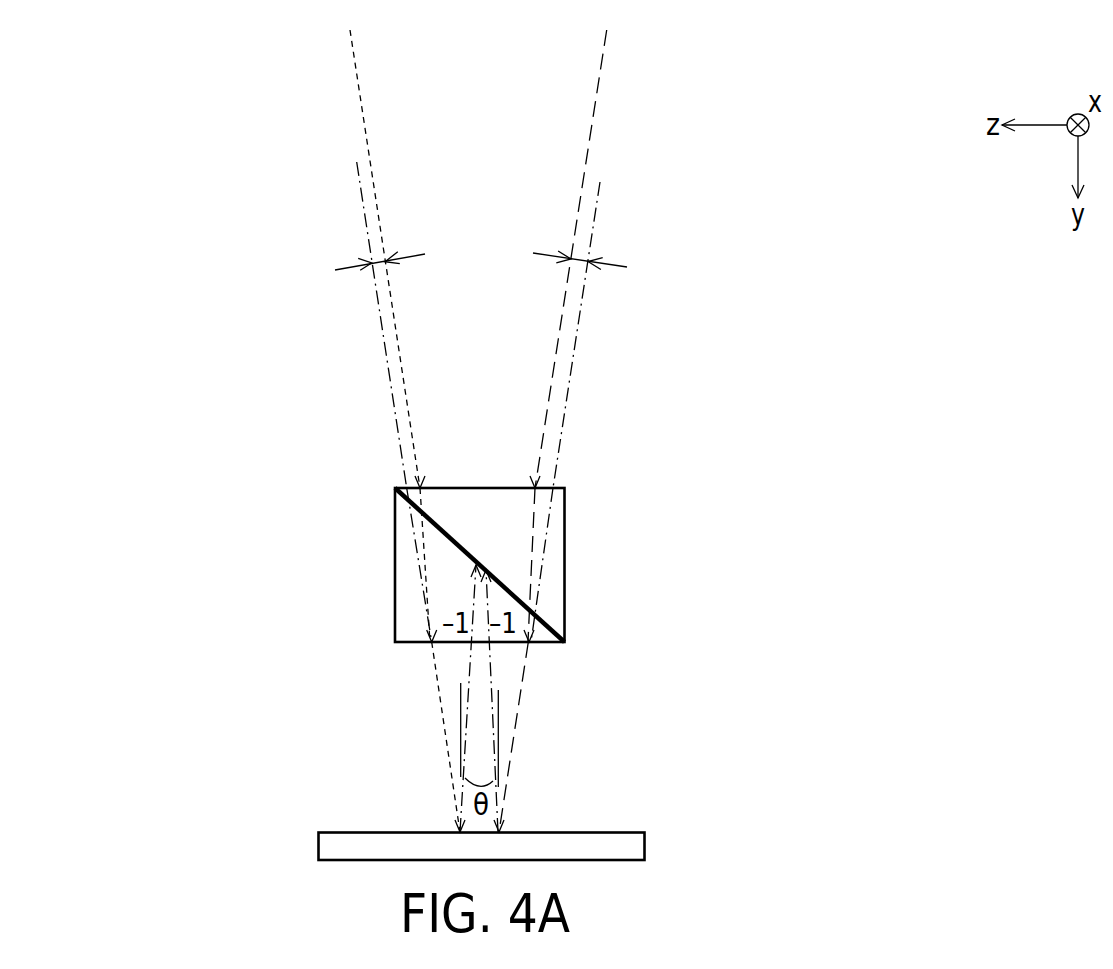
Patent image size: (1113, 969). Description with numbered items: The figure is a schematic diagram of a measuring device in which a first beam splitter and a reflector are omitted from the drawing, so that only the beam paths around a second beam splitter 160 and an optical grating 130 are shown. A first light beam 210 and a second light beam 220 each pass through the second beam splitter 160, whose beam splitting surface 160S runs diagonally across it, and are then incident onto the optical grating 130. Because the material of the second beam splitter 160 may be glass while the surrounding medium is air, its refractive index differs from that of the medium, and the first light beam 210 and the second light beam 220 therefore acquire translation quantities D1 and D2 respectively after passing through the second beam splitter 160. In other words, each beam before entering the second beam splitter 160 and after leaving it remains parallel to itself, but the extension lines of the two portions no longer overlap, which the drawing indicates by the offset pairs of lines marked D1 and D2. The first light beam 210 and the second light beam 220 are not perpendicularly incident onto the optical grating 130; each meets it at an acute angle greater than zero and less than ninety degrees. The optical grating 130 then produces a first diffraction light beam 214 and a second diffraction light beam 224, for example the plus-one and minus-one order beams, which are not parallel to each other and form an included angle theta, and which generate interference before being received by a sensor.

The first light beam 210 is at (358, 89).
The second light beam 220 is at (600, 86).
The translation quantity D1 is at (365, 269).
The translation quantity D2 is at (595, 270).
The second beam splitter 160 is at (558, 545).
The beam splitting surface 160S is at (545, 620).
The first diffraction light beam 214 is at (470, 664).
The second diffraction light beam 224 is at (489, 667).
The optical grating 130 is at (641, 843).